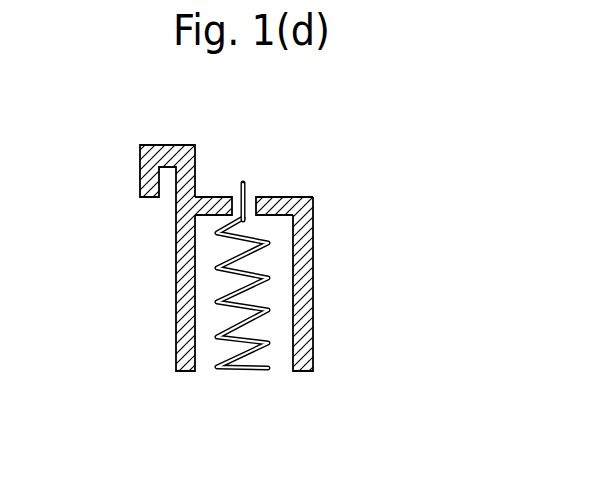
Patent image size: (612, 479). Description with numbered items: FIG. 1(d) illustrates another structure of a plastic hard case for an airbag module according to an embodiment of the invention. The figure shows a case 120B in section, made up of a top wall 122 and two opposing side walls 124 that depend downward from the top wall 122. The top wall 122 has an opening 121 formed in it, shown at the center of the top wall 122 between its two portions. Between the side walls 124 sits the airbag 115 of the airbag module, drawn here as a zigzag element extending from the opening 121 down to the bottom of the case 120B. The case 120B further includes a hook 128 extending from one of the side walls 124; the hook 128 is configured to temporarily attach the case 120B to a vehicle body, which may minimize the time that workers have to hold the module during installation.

The case 120B is at (278, 229).
The hook 128 is at (163, 145).
The top wall 122 is at (283, 197).
The side walls 124 is at (176, 337).
The airbag 115 is at (228, 252).
The opening 121 is at (252, 183).